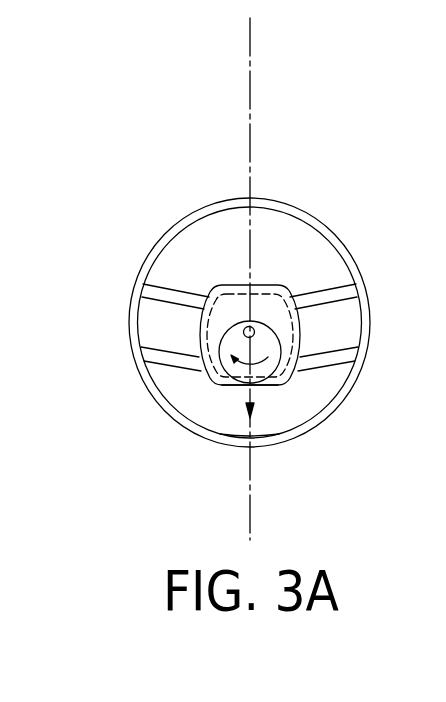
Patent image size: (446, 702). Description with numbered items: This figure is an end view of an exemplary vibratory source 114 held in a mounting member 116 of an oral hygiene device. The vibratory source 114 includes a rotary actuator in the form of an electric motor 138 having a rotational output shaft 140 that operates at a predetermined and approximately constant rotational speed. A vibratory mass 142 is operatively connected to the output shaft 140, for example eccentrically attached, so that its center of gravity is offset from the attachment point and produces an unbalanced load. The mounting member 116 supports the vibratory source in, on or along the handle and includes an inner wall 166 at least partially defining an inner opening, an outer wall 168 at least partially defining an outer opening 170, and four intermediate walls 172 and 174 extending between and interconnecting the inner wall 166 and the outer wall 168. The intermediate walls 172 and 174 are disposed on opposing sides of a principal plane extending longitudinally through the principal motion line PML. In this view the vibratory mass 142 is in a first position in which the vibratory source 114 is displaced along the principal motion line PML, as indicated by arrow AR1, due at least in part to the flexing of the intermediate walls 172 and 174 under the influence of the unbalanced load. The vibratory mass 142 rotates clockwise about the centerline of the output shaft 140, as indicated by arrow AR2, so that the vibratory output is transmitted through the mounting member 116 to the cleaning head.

The principal motion line PML is at (251, 58).
The mounting member 116 is at (199, 203).
The outer opening 170 is at (197, 243).
The outer wall 168 is at (200, 437).
The vibratory source 114 is at (277, 265).
The vibratory mass 142 is at (256, 331).
The inner wall 166 is at (217, 377).
The intermediate wall 174 is at (176, 283).
The intermediate wall 172 is at (318, 287).
The electric motor 138 is at (292, 334).
The rotational output shaft 140 is at (244, 331).
The arrow AR2 is at (258, 366).
The arrow AR1 is at (256, 398).